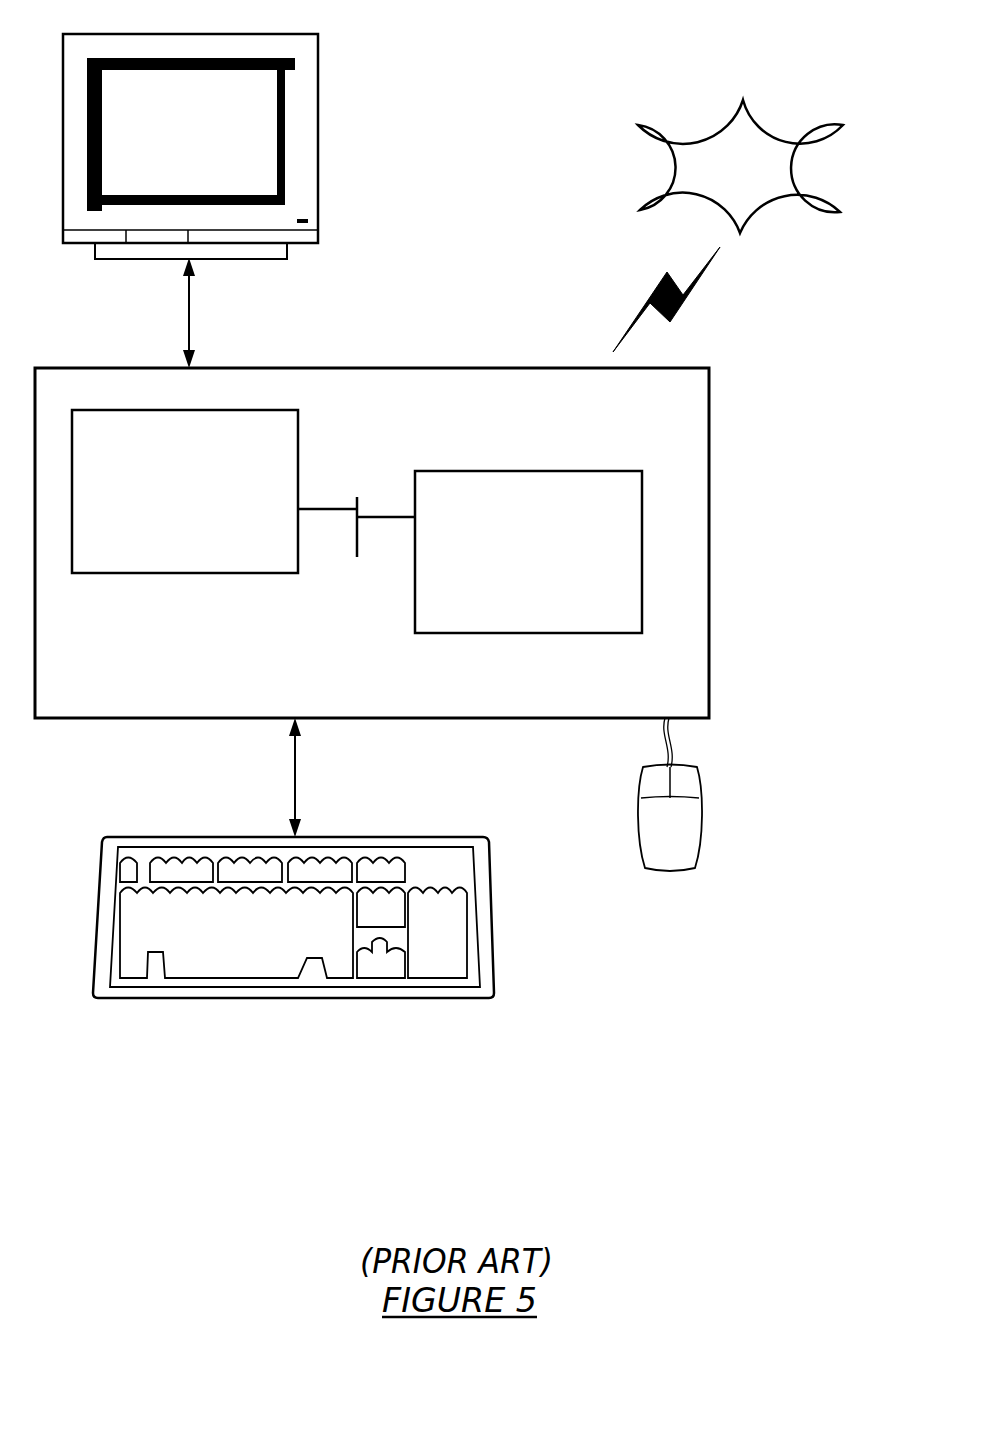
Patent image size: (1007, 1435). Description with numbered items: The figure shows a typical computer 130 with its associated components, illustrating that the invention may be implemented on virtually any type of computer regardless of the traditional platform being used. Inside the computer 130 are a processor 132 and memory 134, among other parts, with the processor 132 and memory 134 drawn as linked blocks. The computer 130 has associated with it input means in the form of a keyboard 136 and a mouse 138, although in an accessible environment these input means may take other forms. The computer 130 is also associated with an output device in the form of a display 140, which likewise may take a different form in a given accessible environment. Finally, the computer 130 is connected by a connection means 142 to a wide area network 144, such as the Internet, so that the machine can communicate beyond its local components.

The computer 130 is at (423, 543).
The processor 132 is at (212, 504).
The memory 134 is at (560, 563).
The keyboard 136 is at (213, 943).
The mouse 138 is at (695, 840).
The display 140 is at (163, 153).
The connection means 142 is at (640, 277).
The wide area network 144 is at (705, 82).